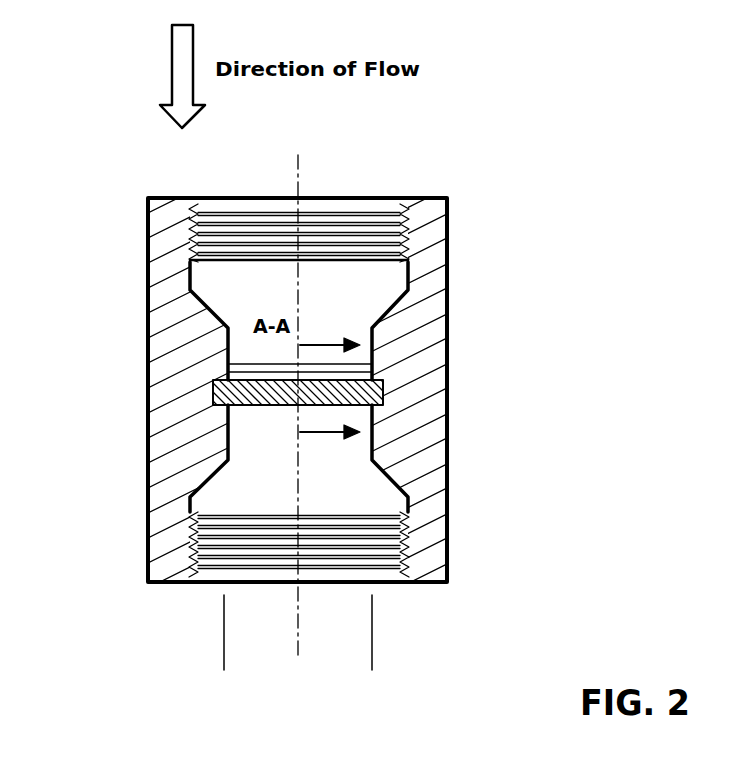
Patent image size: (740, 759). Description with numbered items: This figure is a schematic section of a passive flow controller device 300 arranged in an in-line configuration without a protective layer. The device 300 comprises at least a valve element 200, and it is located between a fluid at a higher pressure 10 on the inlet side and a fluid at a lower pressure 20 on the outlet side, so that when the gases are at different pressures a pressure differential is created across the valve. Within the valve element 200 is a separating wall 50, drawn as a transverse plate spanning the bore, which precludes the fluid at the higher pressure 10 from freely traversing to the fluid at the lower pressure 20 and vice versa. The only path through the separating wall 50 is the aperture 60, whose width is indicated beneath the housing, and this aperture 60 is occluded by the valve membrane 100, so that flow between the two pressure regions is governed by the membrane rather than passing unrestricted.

The fluid at a higher pressure 10 is at (354, 298).
The fluid at a lower pressure 20 is at (334, 460).
The separating wall 50 is at (428, 370).
The aperture 60 is at (240, 633).
The valve membrane 100 is at (470, 412).
The valve element 200 is at (382, 395).
The passive flow controller device 300 is at (124, 186).